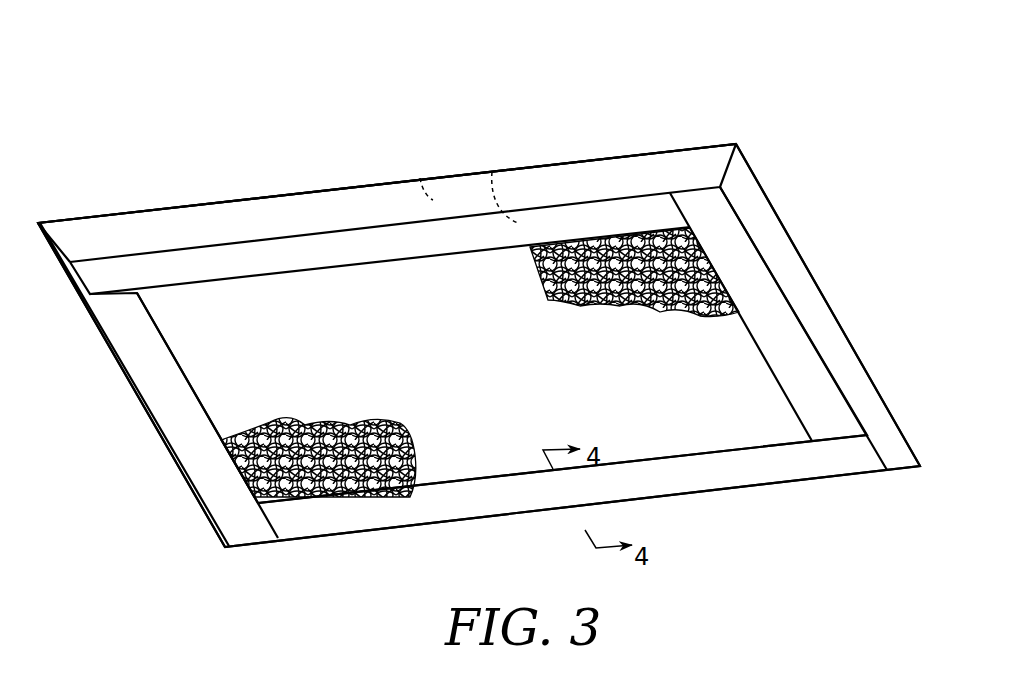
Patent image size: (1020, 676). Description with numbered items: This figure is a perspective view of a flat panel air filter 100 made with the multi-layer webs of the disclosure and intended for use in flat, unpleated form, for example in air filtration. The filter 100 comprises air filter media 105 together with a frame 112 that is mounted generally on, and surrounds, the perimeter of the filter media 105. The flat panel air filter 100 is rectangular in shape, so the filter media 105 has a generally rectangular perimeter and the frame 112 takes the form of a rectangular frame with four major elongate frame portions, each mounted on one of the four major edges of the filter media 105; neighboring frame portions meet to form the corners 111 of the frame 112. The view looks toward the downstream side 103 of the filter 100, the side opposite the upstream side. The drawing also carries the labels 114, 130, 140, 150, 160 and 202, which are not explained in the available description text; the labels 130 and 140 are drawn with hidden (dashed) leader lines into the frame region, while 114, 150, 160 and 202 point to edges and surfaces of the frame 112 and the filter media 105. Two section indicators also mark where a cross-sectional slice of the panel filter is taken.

The flat panel air filter 100 is at (245, 70).
The downstream side 103 is at (820, 178).
The air filter media 105 is at (602, 237).
The corners of frame 111 is at (920, 466).
The frame 112 is at (325, 190).
The left side wall 114 is at (40, 222).
The hidden channel 130 is at (492, 172).
The hidden opening 140 is at (420, 178).
The back wall top surface 150 is at (256, 222).
The inner wall surface 160 is at (652, 208).
The front wall 202 is at (755, 530).